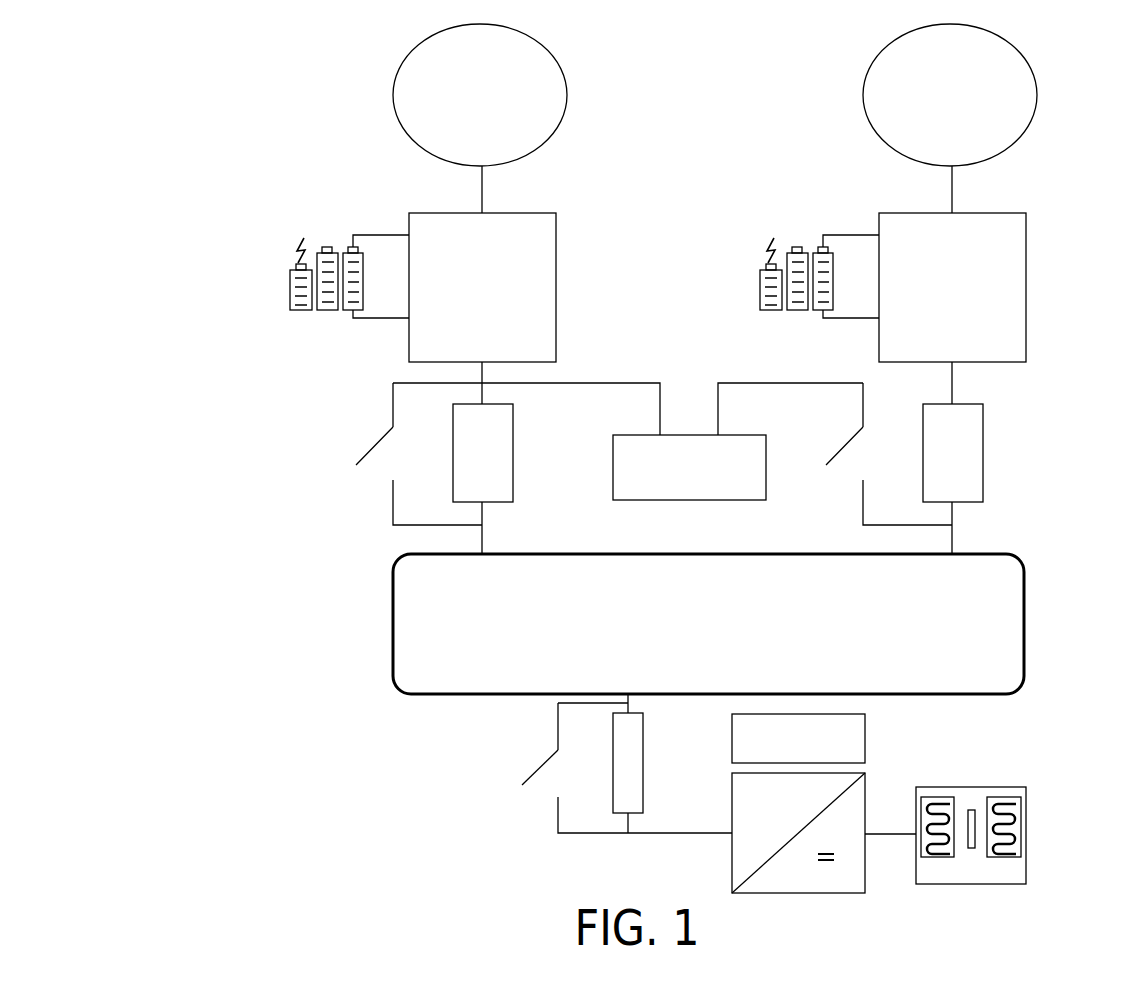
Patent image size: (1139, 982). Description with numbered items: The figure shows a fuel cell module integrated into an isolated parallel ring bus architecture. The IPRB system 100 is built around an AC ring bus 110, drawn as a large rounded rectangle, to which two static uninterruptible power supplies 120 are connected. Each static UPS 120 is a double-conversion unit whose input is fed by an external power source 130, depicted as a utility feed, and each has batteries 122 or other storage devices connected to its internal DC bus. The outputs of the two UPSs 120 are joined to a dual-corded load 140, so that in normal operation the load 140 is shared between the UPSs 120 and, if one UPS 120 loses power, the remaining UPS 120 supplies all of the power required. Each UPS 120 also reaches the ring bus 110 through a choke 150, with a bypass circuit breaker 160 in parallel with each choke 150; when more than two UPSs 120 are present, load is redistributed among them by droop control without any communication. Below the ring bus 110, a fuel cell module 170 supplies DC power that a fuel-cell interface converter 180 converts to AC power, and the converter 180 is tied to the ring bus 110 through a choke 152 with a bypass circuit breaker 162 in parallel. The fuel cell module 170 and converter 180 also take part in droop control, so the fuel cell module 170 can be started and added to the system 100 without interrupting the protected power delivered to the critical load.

The IPRB system 100 is at (152, 230).
The AC ring bus 110 is at (382, 610).
The static uninterruptible power supply 120 is at (567, 205).
The battery 122 is at (315, 228).
The external power source 130 is at (597, 72).
The dual-corded load 140 is at (692, 425).
The choke 150 is at (518, 470).
The choke 152 is at (598, 760).
The bypass circuit breaker 160 is at (345, 445).
The bypass circuit breaker 162 is at (525, 765).
The fuel cell module 170 is at (1027, 828).
The fuel-cell interface converter 180 is at (870, 770).